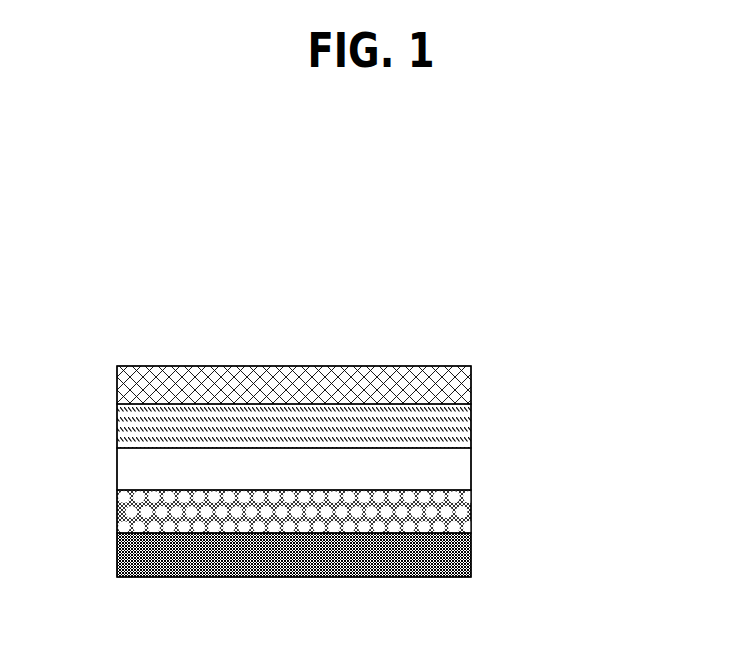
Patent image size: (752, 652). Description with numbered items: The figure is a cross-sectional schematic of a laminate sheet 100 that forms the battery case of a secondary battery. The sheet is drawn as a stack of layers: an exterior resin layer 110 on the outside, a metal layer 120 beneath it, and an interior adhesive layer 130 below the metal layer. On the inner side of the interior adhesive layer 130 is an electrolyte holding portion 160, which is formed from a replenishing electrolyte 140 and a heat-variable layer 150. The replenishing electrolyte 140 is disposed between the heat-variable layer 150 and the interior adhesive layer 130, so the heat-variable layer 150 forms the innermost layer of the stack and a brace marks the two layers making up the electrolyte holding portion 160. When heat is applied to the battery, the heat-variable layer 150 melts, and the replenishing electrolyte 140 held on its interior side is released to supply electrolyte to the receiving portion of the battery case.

The laminate sheet 100 is at (103, 323).
The exterior resin layer 110 is at (471, 390).
The metal layer 120 is at (471, 433).
The interior adhesive layer 130 is at (471, 475).
The replenishing electrolyte 140 is at (471, 515).
The heat-variable layer 150 is at (471, 556).
The electrolyte holding portion 160 is at (658, 512).